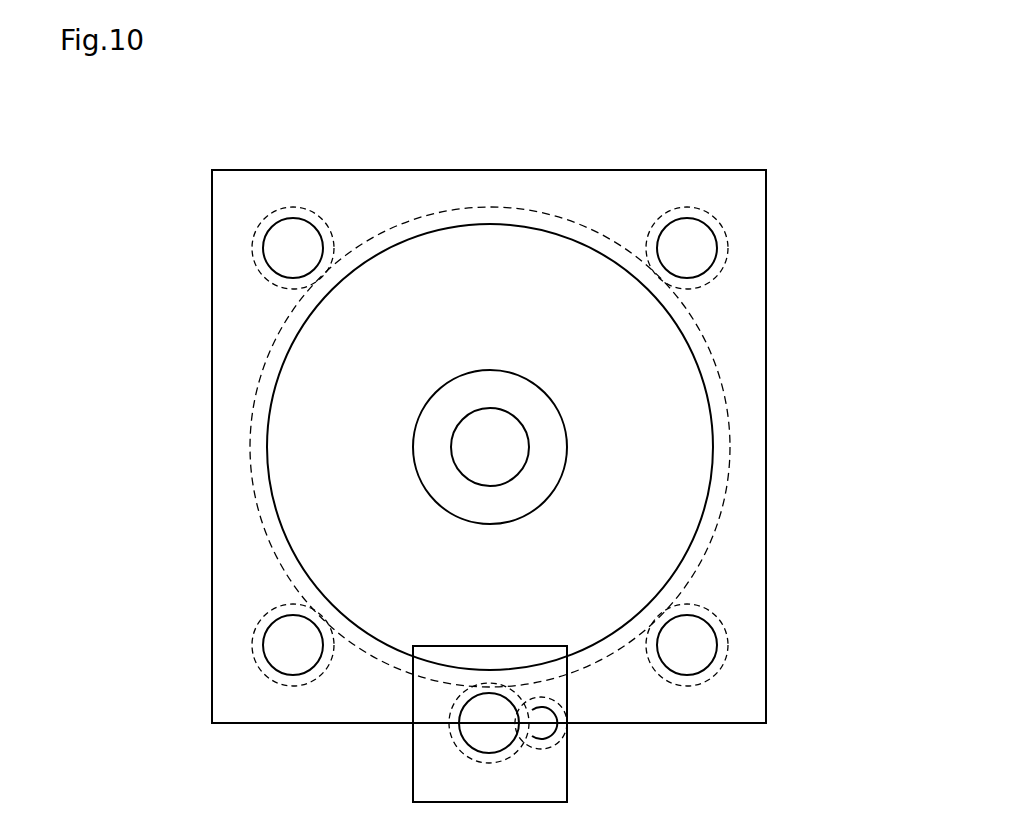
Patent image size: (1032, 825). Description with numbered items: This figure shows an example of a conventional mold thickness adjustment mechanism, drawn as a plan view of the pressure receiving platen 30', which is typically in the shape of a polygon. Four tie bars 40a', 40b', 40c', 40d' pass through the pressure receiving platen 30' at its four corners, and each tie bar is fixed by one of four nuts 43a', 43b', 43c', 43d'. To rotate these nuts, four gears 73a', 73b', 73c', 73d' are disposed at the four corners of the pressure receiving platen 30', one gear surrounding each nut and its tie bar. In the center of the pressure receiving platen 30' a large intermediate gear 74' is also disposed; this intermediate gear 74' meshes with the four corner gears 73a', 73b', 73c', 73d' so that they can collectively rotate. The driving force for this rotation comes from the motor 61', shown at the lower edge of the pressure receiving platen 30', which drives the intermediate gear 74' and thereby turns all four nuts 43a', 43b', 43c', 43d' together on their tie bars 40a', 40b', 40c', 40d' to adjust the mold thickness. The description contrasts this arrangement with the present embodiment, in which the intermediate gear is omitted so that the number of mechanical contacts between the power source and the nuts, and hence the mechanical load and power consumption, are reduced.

The pressure receiving platen 30' is at (489, 413).
The intermediate gear 74' is at (556, 447).
The tie bar 40a' is at (208, 257).
The nut 43a' is at (205, 273).
The gear 73a' is at (293, 198).
The tie bar 40b' is at (761, 645).
The nut 43b' is at (768, 646).
The gear 73b' is at (745, 676).
The tie bar 40c' is at (762, 247).
The nut 43c' is at (769, 247).
The gear 73c' is at (753, 215).
The tie bar 40d' is at (207, 635).
The nut 43d' is at (205, 635).
The gear 73d' is at (214, 666).
The motor 61' is at (531, 724).